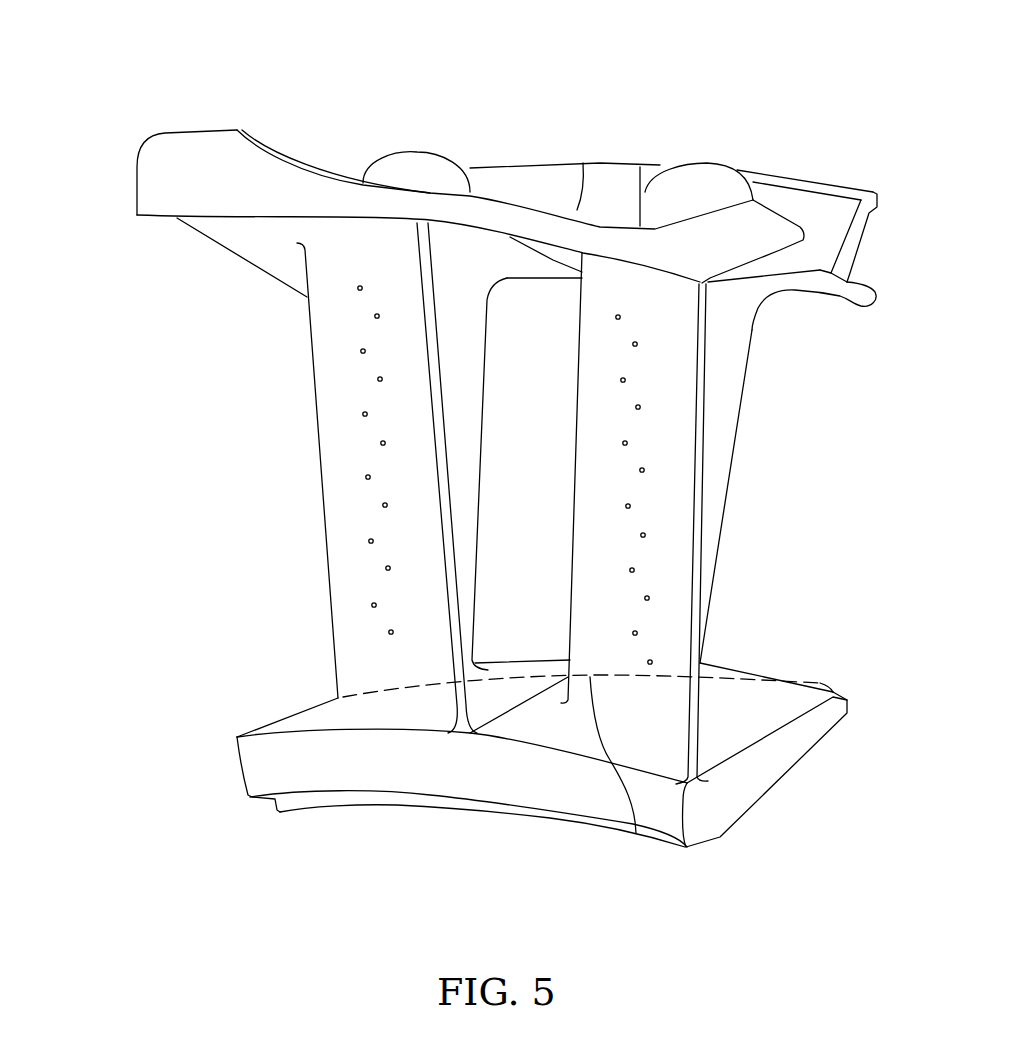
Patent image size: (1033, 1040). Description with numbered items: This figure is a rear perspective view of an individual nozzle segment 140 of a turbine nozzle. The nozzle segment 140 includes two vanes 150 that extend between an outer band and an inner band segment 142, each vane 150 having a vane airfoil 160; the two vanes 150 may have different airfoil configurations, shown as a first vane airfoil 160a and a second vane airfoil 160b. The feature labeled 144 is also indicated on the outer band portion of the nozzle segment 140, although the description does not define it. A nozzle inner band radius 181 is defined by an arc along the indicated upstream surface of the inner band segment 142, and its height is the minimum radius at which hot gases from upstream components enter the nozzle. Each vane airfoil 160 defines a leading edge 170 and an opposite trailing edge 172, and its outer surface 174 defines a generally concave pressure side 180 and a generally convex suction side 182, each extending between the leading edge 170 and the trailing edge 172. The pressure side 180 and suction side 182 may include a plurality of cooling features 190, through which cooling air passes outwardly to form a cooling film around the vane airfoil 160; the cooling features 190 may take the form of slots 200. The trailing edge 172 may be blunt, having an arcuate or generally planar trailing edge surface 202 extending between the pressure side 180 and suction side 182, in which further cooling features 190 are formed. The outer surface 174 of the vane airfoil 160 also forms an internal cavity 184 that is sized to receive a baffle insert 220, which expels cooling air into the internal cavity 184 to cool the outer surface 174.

The nozzle segment 140 is at (462, 456).
The inner band segment 142 is at (503, 770).
The outer band flange top surface 144 is at (550, 163).
The vane 150 is at (462, 191).
The vane airfoil 160 is at (492, 503).
The first vane airfoil 160a is at (312, 427).
The second vane airfoil 160b is at (672, 470).
The leading edge 170 is at (485, 385).
The trailing edge 172 is at (445, 437).
The outer surface 174 is at (327, 412).
The pressure side 180 is at (478, 308).
The nozzle inner band radius 181 is at (636, 833).
The suction side 182 is at (335, 531).
The internal cavity 184 is at (345, 670).
The cooling features 190 is at (345, 605).
The slot 200 is at (392, 247).
The trailing edge surface 202 is at (697, 598).
The baffle insert 220 is at (705, 123).